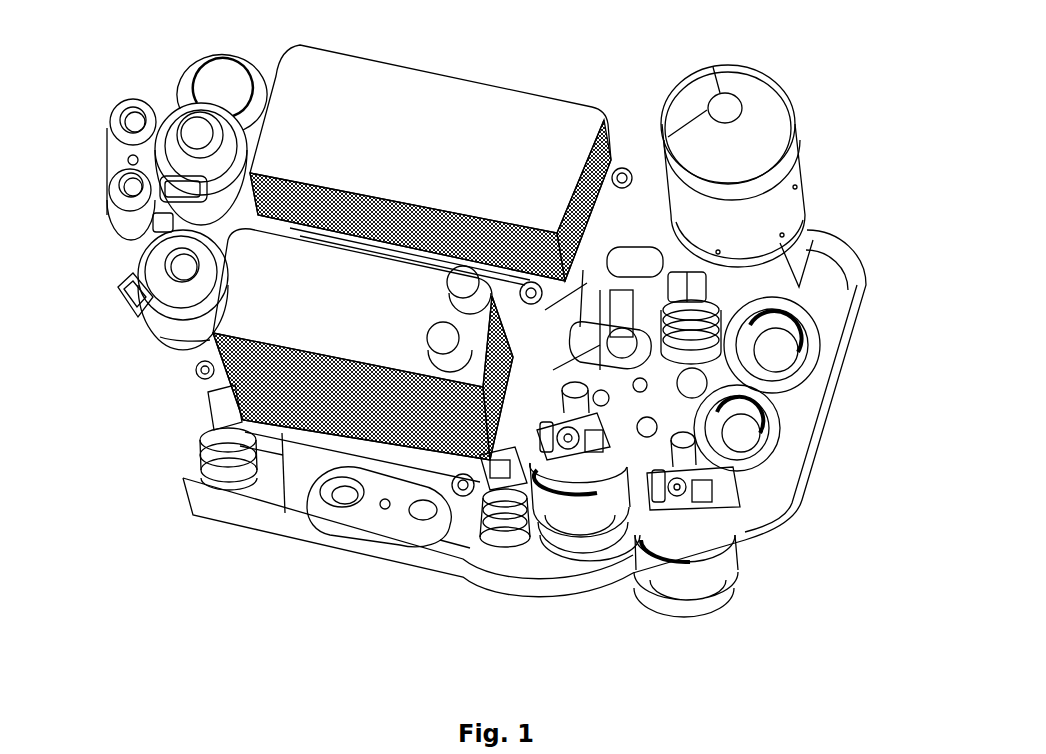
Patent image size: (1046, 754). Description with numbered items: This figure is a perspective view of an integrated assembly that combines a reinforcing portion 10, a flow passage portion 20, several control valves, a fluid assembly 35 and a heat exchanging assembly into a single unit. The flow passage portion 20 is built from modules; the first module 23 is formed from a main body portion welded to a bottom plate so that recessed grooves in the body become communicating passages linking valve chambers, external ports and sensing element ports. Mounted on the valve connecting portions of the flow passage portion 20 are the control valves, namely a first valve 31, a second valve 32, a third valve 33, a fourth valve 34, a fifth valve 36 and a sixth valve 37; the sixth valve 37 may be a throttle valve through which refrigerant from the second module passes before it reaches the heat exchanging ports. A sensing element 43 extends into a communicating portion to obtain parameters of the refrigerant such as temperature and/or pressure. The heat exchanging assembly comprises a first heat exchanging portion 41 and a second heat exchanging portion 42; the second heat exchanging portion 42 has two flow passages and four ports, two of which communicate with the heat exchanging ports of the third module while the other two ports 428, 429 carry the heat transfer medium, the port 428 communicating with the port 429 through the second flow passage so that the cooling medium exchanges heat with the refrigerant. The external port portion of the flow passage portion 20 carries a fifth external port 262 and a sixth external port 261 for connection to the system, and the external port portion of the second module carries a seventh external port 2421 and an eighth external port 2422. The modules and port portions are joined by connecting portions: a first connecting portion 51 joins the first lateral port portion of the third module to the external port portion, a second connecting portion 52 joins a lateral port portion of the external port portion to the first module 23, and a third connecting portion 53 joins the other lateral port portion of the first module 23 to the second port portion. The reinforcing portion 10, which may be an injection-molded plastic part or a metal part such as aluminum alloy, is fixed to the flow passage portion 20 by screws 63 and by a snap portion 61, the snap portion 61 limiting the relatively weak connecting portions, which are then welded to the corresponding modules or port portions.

The reinforcing portion 10 is at (840, 290).
The flow passage portion 20 is at (800, 458).
The first module 23 is at (617, 537).
The first valve 31 is at (790, 348).
The second valve 32 is at (697, 533).
The third valve 33 is at (750, 427).
The fourth valve 34 is at (190, 140).
The fluid assembly 35 is at (738, 230).
The fifth valve 36 is at (568, 478).
The sixth valve 37 is at (123, 313).
The first heat exchanging portion 41 is at (320, 150).
The second heat exchanging portion 42 is at (213, 335).
The sensing element 43 is at (217, 433).
The first connecting portion 51 is at (297, 497).
The second connecting portion 52 is at (465, 527).
The third connecting portion 53 is at (820, 250).
The snap portion 61 is at (634, 260).
The screws 63 is at (617, 177).
The sixth external port 261 is at (343, 497).
The fifth external port 262 is at (417, 510).
The port 428 is at (440, 338).
The port 429 is at (460, 283).
The seventh external port 2421 is at (133, 123).
The eighth external port 2422 is at (137, 183).